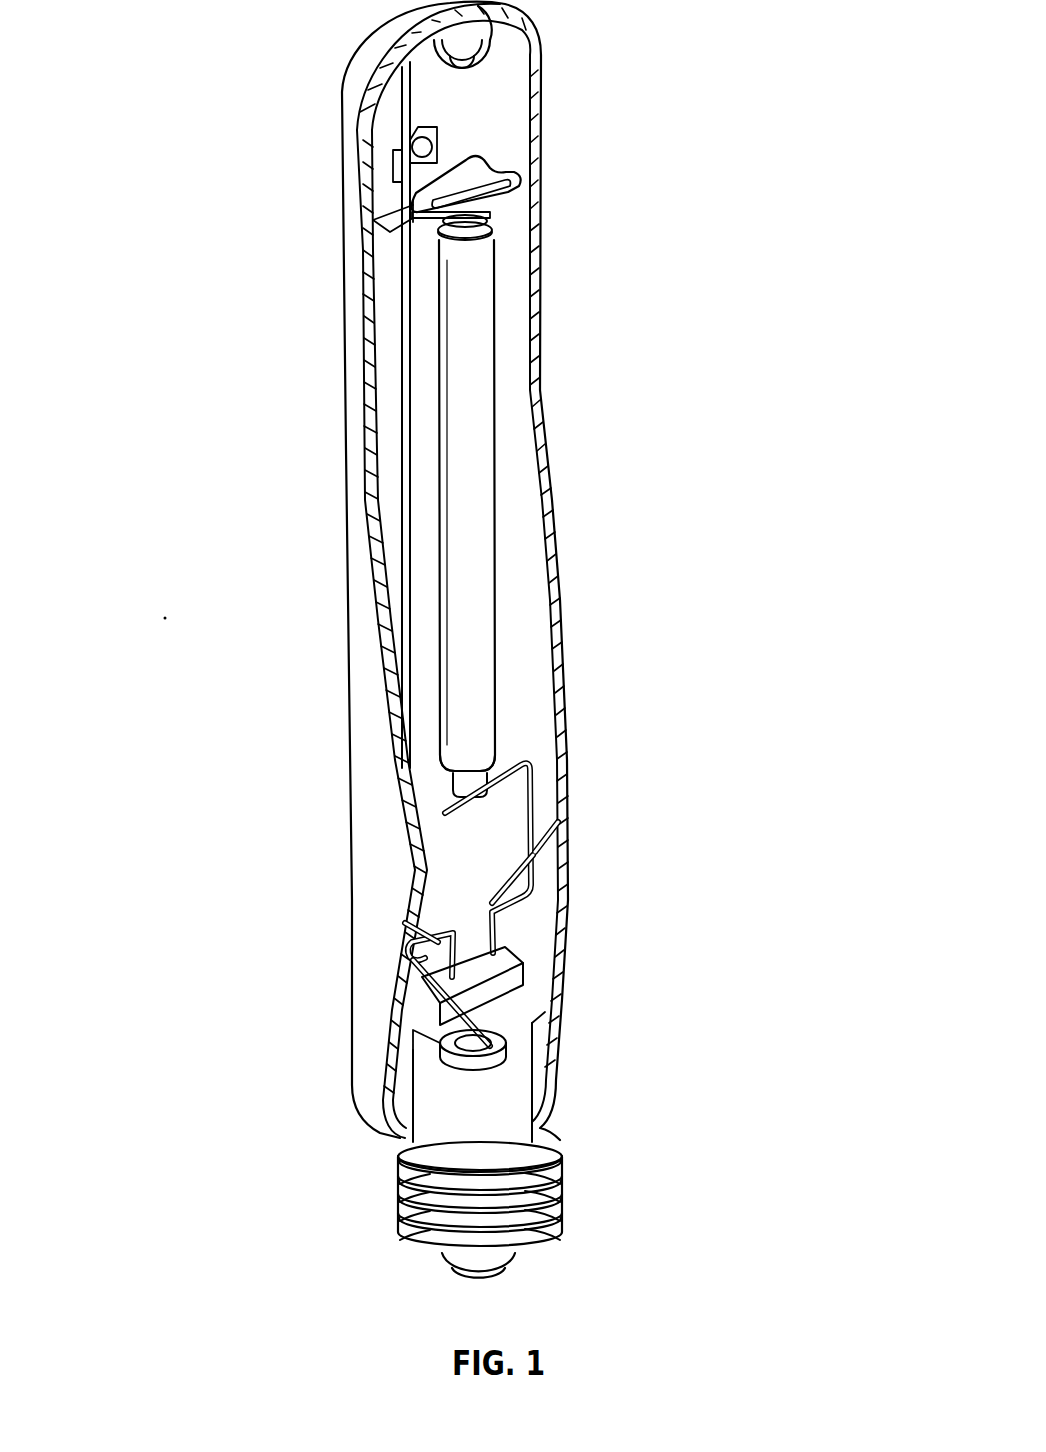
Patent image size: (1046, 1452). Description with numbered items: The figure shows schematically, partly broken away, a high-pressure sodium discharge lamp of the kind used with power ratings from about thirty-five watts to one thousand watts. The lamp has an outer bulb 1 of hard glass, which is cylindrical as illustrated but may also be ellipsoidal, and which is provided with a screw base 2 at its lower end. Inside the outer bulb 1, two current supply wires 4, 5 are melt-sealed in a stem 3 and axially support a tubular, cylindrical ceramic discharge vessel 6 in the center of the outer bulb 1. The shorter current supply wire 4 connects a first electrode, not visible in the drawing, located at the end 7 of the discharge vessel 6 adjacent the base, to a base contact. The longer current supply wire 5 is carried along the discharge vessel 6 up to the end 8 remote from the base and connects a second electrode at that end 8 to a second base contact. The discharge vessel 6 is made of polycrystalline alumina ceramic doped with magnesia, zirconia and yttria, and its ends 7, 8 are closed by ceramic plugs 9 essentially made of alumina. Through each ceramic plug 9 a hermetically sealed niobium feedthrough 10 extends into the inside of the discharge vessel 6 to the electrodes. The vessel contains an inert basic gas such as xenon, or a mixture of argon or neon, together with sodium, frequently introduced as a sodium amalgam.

The outer bulb 1 is at (348, 578).
The screw base 2 is at (375, 1182).
The stem 3 is at (483, 1098).
The current supply wire 4 is at (550, 888).
The current supply wire 5 is at (404, 464).
The discharge vessel 6 is at (495, 507).
The end of the discharge vessel 7 is at (495, 742).
The end of the discharge vessel 8 is at (492, 236).
The ceramic plug 9 is at (440, 232).
The niobium feedthrough 10 is at (497, 215).